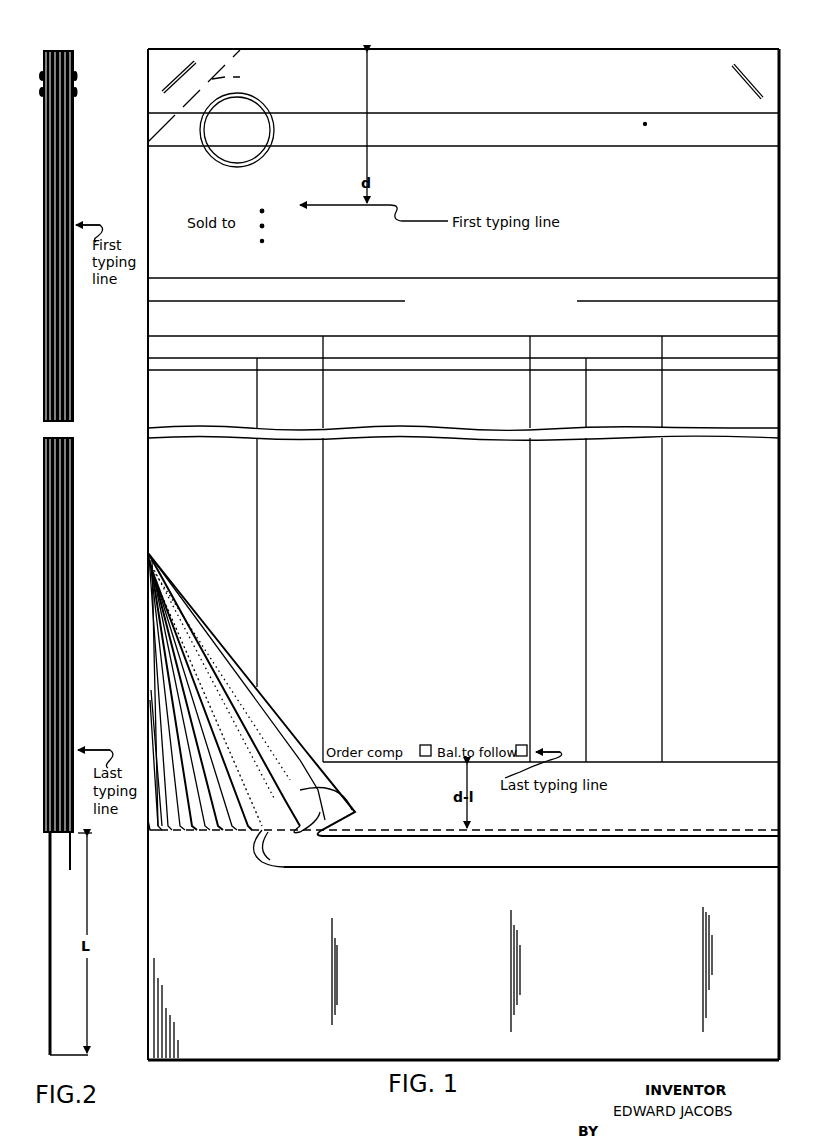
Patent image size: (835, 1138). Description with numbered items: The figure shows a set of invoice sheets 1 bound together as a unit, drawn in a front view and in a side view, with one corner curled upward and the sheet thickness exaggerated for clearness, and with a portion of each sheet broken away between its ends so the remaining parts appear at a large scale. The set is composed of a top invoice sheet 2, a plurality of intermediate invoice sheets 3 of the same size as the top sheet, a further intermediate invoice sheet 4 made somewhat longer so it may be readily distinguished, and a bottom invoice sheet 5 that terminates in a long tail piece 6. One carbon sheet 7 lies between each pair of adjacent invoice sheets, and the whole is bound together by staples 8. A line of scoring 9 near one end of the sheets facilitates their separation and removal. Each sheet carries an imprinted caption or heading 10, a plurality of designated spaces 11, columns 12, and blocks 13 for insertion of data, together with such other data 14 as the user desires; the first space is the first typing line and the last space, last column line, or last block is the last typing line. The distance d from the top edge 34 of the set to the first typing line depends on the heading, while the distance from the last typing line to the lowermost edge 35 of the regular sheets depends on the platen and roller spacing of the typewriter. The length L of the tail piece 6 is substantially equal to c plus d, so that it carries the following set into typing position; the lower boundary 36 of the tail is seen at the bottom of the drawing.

In FIG. 1, the set of invoice sheets 1 is at (147, 318).
In FIG. 2, the set of invoice sheets 1 is at (75, 400).
In FIG. 1, the top invoice sheet 2 is at (336, 790).
In FIG. 1, the intermediate invoice sheets 3 is at (208, 834).
In FIG. 1, the intermediate invoice sheet 4 is at (330, 868).
In FIG. 2, the intermediate invoice sheet 4 is at (71, 870).
In FIG. 1, the bottom invoice sheet 5 is at (147, 828).
In FIG. 2, the bottom invoice sheet 5 is at (46, 750).
In FIG. 1, the tail piece 6 is at (150, 966).
In FIG. 2, the tail piece 6 is at (50, 918).
In FIG. 1, the carbon sheets 7 is at (258, 832).
In FIG. 1, the staples 8 is at (168, 74).
In FIG. 1, the line of scoring 9 is at (211, 108).
In FIG. 1, the caption or heading 10 is at (556, 113).
In FIG. 1, the spaces 11 is at (268, 292).
In FIG. 1, the columns 12 is at (455, 549).
In FIG. 1, the blocks 13 is at (432, 733).
In FIG. 1, the other data 14 is at (585, 330).
In FIG. 1, the top edge 34 is at (460, 50).
In FIG. 1, the lowermost edge 35 is at (608, 838).
In FIG. 1, the bottom border 36 is at (262, 1059).